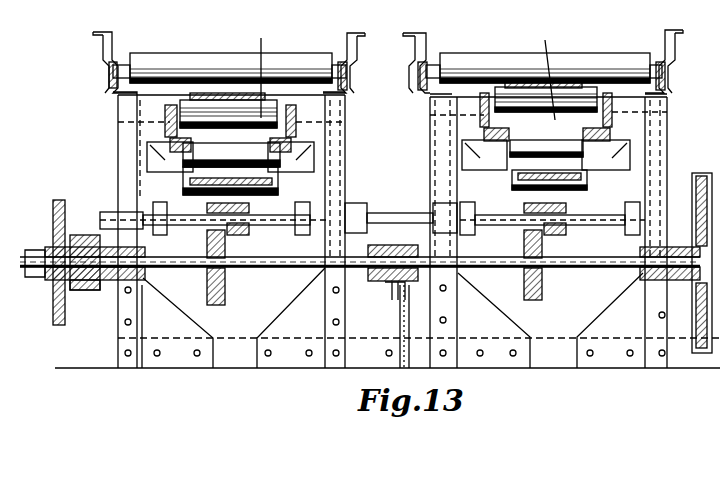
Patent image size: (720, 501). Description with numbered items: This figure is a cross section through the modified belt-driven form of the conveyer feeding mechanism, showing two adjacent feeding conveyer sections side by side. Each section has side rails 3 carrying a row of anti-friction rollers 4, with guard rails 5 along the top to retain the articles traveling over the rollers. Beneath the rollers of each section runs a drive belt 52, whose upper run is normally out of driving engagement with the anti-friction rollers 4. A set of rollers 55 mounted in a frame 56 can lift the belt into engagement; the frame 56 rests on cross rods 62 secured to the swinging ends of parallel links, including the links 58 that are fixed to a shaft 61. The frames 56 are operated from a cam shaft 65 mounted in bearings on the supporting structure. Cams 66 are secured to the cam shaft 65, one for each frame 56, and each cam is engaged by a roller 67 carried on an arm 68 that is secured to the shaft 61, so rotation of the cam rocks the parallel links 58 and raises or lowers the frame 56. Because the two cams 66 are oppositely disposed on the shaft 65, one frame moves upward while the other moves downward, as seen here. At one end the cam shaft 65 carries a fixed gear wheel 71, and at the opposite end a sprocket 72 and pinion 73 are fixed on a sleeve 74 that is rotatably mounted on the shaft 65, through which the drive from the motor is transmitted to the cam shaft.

The side rail 3 is at (113, 95).
The anti-friction roller 4 is at (218, 53).
The guard rail 5 is at (103, 32).
The drive belt 52 is at (403, 68).
The roller 55 is at (203, 107).
The frame 56 is at (172, 135).
The parallel link 58 is at (155, 203).
The shaft 61 is at (394, 213).
The cross member or rod 62 is at (242, 165).
The cam shaft 65 is at (258, 268).
The cam 66 is at (222, 302).
The roller 67 is at (210, 235).
The arm 68 is at (250, 234).
The gear wheel 71 is at (704, 176).
The sprocket 72 is at (52, 210).
The pinion 73 is at (75, 235).
The sleeve 74 is at (77, 290).